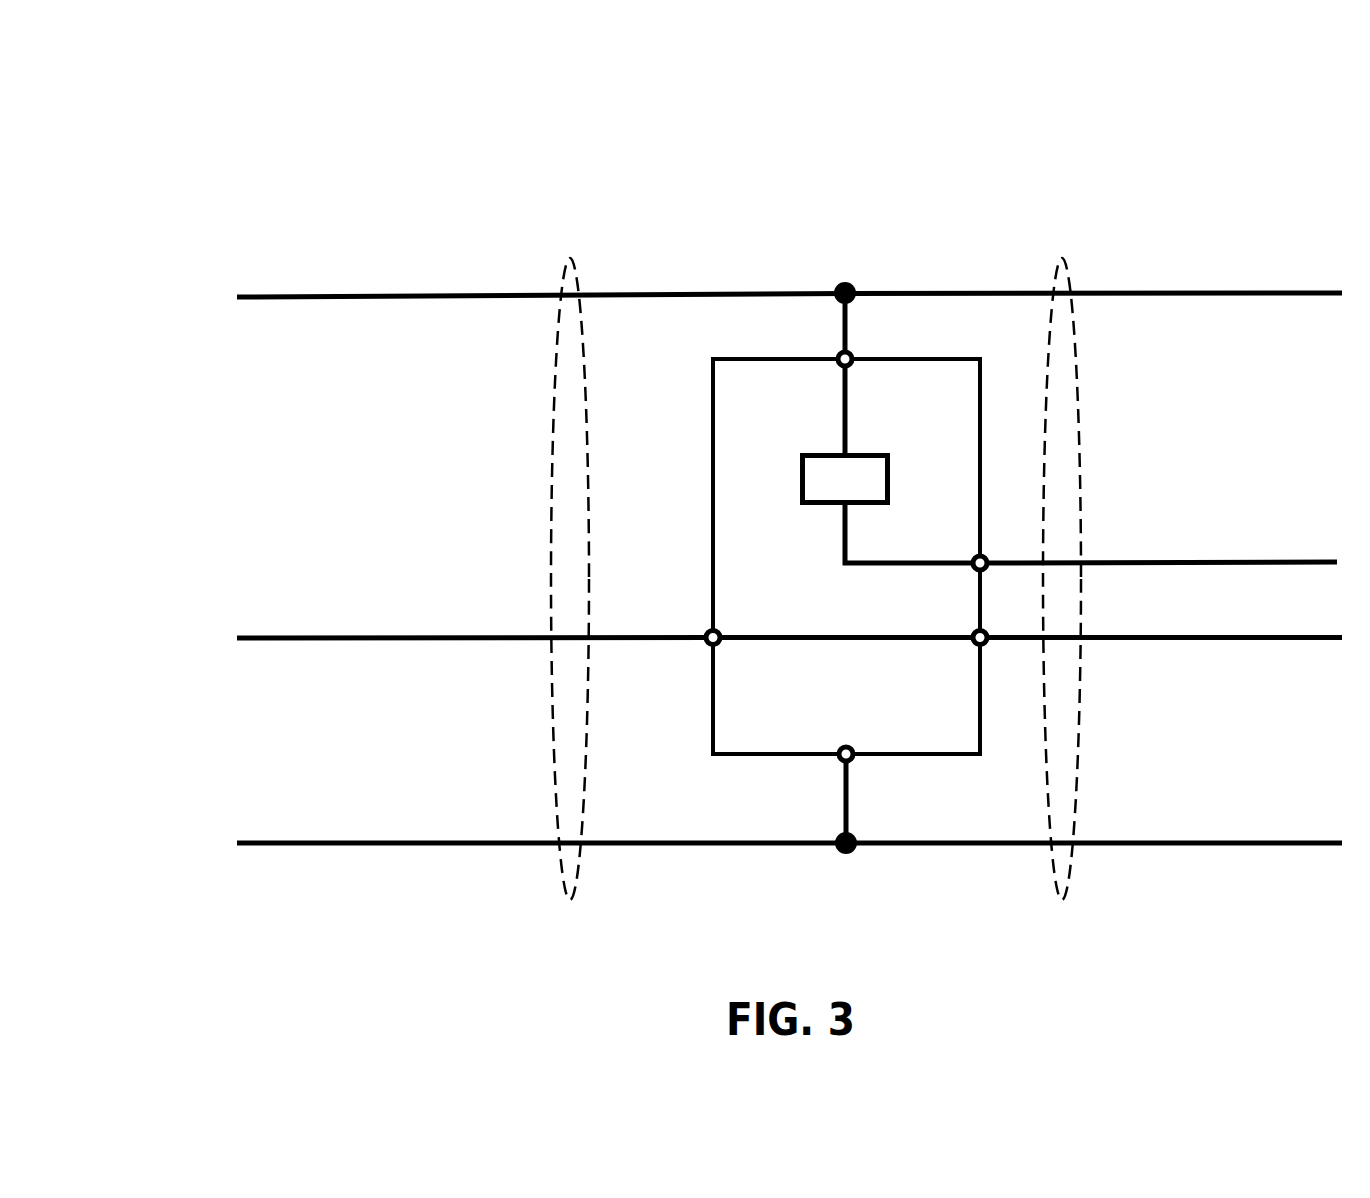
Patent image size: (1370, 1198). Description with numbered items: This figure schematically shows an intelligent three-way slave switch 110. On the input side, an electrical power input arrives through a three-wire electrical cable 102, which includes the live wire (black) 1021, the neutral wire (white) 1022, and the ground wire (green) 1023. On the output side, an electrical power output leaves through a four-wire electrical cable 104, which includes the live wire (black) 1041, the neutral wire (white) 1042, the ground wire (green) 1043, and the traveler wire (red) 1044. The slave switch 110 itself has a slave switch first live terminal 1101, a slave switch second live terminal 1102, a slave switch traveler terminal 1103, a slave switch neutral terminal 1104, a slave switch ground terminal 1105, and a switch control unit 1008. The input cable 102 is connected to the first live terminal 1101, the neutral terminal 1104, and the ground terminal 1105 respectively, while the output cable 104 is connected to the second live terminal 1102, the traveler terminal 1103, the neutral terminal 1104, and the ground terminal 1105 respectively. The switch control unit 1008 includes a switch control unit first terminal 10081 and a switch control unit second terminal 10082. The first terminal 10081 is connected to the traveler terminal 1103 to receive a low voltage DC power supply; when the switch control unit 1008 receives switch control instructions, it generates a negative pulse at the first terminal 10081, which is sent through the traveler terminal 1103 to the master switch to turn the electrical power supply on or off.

The intelligent three-way slave switch 110 is at (192, 186).
The three-wire electrical cable 102 is at (549, 404).
The four-wire electrical cable 104 is at (1083, 368).
The live wire (black) 1021 is at (362, 639).
The neutral wire (white) 1022 is at (362, 297).
The ground wire (green) 1023 is at (365, 844).
The live wire (black) 1041 is at (1210, 638).
The neutral wire (white) 1042 is at (1210, 294).
The ground wire (green) 1043 is at (1215, 844).
The traveler wire (red) 1044 is at (1125, 562).
The switch control unit 1008 is at (800, 503).
The switch control unit first terminal 10081 is at (840, 524).
The switch control unit second terminal 10082 is at (840, 442).
The slave switch first live terminal 1101 is at (708, 632).
The slave switch second live terminal 1102 is at (975, 645).
The slave switch traveler terminal 1103 is at (972, 555).
The slave switch neutral terminal 1104 is at (843, 362).
The slave switch ground terminal 1105 is at (838, 751).